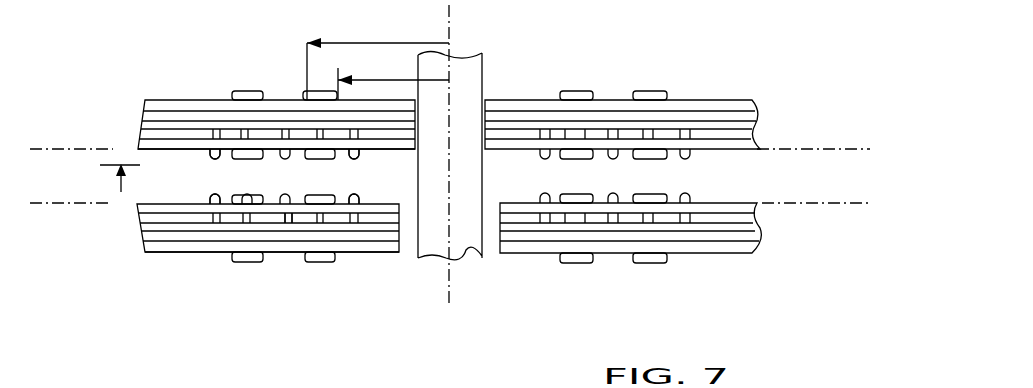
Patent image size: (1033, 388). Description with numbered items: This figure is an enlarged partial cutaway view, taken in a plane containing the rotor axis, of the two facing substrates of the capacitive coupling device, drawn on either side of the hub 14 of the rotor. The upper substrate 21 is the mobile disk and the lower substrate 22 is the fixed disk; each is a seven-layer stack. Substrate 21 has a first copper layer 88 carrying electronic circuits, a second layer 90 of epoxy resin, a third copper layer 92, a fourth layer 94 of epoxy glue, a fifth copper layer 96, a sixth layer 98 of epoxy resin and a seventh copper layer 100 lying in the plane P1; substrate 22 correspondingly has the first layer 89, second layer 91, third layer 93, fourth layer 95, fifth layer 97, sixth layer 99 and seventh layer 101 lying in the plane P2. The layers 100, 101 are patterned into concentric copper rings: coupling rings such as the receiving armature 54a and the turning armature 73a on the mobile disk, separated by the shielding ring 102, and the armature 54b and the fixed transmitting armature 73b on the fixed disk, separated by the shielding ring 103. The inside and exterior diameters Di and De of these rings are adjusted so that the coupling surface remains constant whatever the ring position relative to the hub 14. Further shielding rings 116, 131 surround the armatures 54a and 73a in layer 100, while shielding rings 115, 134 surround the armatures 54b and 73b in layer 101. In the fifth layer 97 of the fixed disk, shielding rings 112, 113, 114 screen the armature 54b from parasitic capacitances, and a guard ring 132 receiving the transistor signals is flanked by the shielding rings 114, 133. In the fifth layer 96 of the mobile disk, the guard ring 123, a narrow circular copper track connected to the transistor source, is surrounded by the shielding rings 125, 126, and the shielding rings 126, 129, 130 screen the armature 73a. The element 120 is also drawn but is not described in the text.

The hub 14 is at (466, 251).
The substrate 21 is at (757, 84).
The substrate 22 is at (757, 270).
The armature 54a is at (250, 160).
The armature 54b is at (252, 197).
The turning armature 73a is at (355, 159).
The fixed armature 73b is at (356, 199).
The first layer 88 is at (247, 92).
The first layer 89 is at (250, 258).
The second layer 90 is at (157, 104).
The second layer 91 is at (143, 255).
The third layer 92 is at (147, 113).
The third layer 93 is at (145, 243).
The fourth layer 94 is at (140, 127).
The fourth layer 95 is at (145, 238).
The fifth layer 96 is at (140, 135).
The fifth layer 97 is at (145, 225).
The sixth layer 98 is at (140, 143).
The sixth layer 99 is at (140, 209).
The seventh layer 100 is at (209, 157).
The seventh layer 101 is at (209, 196).
The shielding ring 102 is at (289, 160).
The shielding ring 103 is at (292, 224).
The shielding ring 112 is at (214, 205).
The shielding ring 113 is at (246, 224).
The shielding ring 114 is at (286, 224).
The shielding ring 115 is at (214, 224).
The shielding ring 116 is at (217, 130).
The substrate 120 is at (451, 379).
The guard ring 123 is at (242, 130).
The shielding ring 125 is at (216, 150).
The shielding ring 126 is at (287, 130).
The shielding ring 129 is at (306, 92).
The shielding ring 130 is at (356, 134).
The shielding ring 131 is at (358, 153).
The guard ring 132 is at (322, 223).
The shielding ring 133 is at (357, 223).
The shielding ring 134 is at (358, 205).
The plane P1 is at (467, 152).
The plane P2 is at (467, 206).
The exterior diameter De is at (378, 61).
The inside diameter Di is at (393, 77).